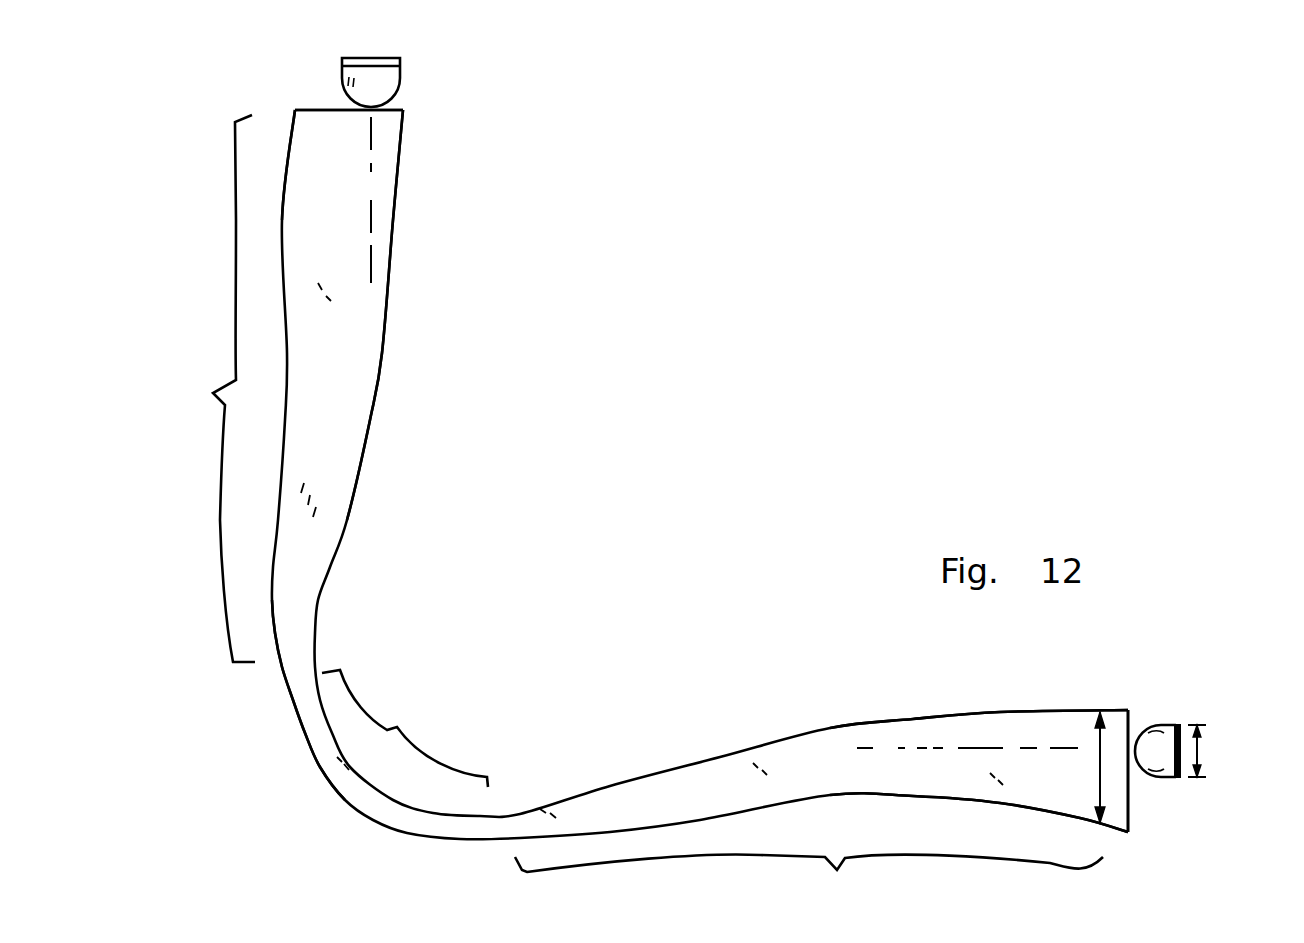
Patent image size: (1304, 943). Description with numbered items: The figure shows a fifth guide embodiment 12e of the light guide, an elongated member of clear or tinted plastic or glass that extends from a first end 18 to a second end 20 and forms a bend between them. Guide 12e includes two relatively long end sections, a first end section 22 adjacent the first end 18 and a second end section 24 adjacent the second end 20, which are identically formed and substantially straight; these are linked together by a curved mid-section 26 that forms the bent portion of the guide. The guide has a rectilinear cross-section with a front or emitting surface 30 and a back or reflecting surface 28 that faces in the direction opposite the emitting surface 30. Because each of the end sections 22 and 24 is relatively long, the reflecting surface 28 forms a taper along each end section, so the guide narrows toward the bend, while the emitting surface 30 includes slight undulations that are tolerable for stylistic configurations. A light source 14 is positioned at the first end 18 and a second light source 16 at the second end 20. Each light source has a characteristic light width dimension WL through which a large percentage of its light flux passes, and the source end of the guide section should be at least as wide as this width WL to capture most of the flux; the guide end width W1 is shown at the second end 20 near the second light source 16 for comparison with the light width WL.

The fifth guide embodiment 12e is at (680, 641).
The light source 14 is at (378, 91).
The second light source 16 is at (1165, 750).
The first end 18 is at (320, 127).
The second end 20 is at (1117, 793).
The first end section 22 is at (206, 388).
The second end section 24 is at (809, 887).
The mid-section 26 is at (405, 728).
The reflecting surface 28 is at (366, 455).
The emitting surface 30 is at (310, 742).
The width dimension W1 is at (1102, 772).
The light width dimension WL is at (1198, 745).